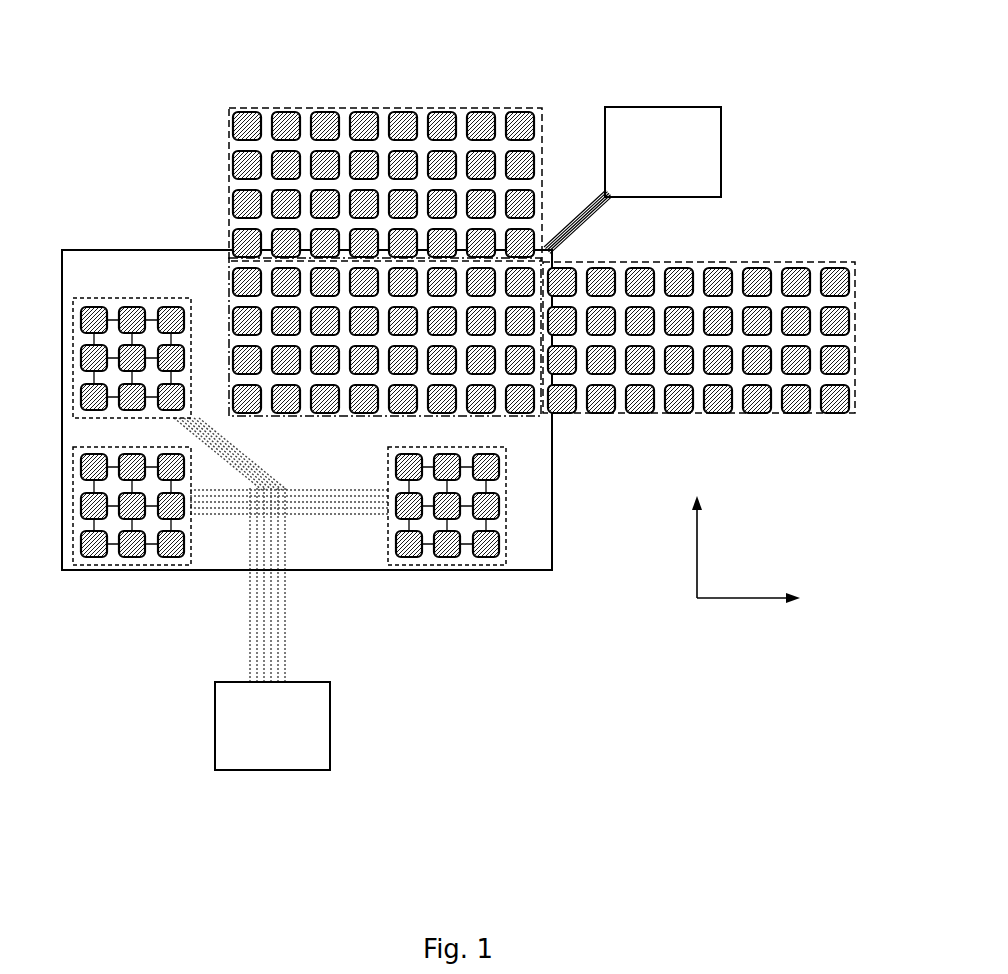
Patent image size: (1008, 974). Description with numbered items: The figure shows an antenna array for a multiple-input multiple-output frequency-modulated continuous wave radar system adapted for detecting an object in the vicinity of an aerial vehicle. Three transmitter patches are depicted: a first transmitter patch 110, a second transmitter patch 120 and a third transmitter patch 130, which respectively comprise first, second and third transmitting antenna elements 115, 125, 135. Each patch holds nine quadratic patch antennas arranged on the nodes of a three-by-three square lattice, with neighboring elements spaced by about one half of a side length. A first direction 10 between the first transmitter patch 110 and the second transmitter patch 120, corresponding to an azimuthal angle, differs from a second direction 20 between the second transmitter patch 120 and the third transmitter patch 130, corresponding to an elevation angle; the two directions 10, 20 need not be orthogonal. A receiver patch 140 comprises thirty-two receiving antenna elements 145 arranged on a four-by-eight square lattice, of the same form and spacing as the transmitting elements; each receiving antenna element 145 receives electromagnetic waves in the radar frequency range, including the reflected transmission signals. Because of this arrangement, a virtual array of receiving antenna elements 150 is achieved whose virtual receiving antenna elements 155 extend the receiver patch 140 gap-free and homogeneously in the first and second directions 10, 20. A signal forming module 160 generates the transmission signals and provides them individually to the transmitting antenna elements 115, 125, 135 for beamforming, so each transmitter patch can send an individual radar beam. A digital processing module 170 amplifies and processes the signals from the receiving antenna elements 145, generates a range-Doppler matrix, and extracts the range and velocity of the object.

The first direction 10 is at (742, 600).
The second direction 20 is at (697, 543).
The first transmitter patch 110 is at (76, 298).
The first transmitting antenna elements 115 is at (172, 306).
The second transmitter patch 120 is at (80, 570).
The second transmitting antenna elements 125 is at (105, 568).
The third transmitter patch 130 is at (408, 568).
The third transmitting antenna elements 135 is at (420, 568).
The receiver patch 140 is at (484, 405).
The receiving antenna elements 145 is at (533, 415).
The virtual array of receiving antenna elements 150 is at (347, 107).
The virtual receiving antenna elements 155 is at (520, 112).
The signal forming module 160 is at (330, 718).
The digital processing module 170 is at (657, 107).